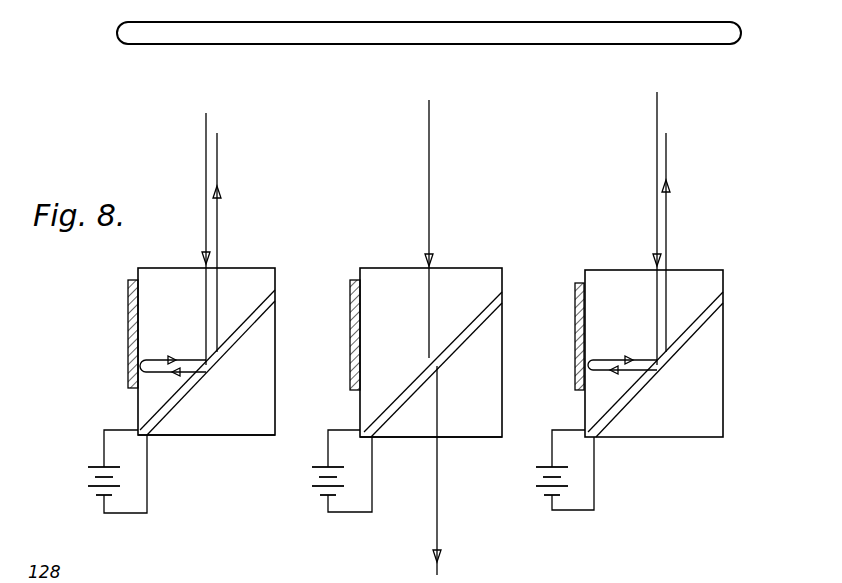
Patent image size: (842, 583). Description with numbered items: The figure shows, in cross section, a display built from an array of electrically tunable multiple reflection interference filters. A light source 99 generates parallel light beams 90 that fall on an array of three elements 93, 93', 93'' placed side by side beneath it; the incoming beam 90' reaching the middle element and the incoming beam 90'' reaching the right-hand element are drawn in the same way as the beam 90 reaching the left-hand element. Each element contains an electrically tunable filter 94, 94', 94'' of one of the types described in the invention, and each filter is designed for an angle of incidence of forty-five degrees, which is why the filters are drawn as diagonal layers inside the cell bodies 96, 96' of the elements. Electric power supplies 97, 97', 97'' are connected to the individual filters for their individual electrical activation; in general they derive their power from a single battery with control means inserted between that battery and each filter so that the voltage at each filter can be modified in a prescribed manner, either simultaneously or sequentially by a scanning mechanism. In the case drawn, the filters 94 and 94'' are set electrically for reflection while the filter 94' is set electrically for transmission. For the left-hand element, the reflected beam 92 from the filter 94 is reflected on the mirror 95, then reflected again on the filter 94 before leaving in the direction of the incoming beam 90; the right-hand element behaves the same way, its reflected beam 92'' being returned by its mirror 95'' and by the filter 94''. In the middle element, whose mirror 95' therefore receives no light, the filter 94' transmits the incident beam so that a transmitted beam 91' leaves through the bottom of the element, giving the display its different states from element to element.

The light source 99 is at (434, 48).
The parallel light beam 90 is at (175, 244).
The reflected beam 92 is at (235, 242).
The element 93 is at (206, 400).
The electrically tunable filter 94 is at (207, 362).
The mirror 95 is at (113, 334).
The cell body 96 is at (206, 454).
The electric power supply 97 is at (97, 471).
The element 93' is at (432, 400).
The electrically tunable filter 94' is at (433, 364).
The reflector layer (second) 95' is at (332, 335).
The cell body (second) 96' is at (431, 457).
The electric power supply 97' is at (324, 471).
The incident light beam (second) 90' is at (448, 229).
The transmitted light beam 91' is at (421, 470).
The element 93'' is at (654, 403).
The electrically tunable filter 94'' is at (655, 364).
The reflector layer (third) 95'' is at (561, 336).
The incident light beam (third) 90'' is at (624, 233).
The reflected light beam (third) 92'' is at (691, 242).
The electric power supply 97'' is at (565, 470).